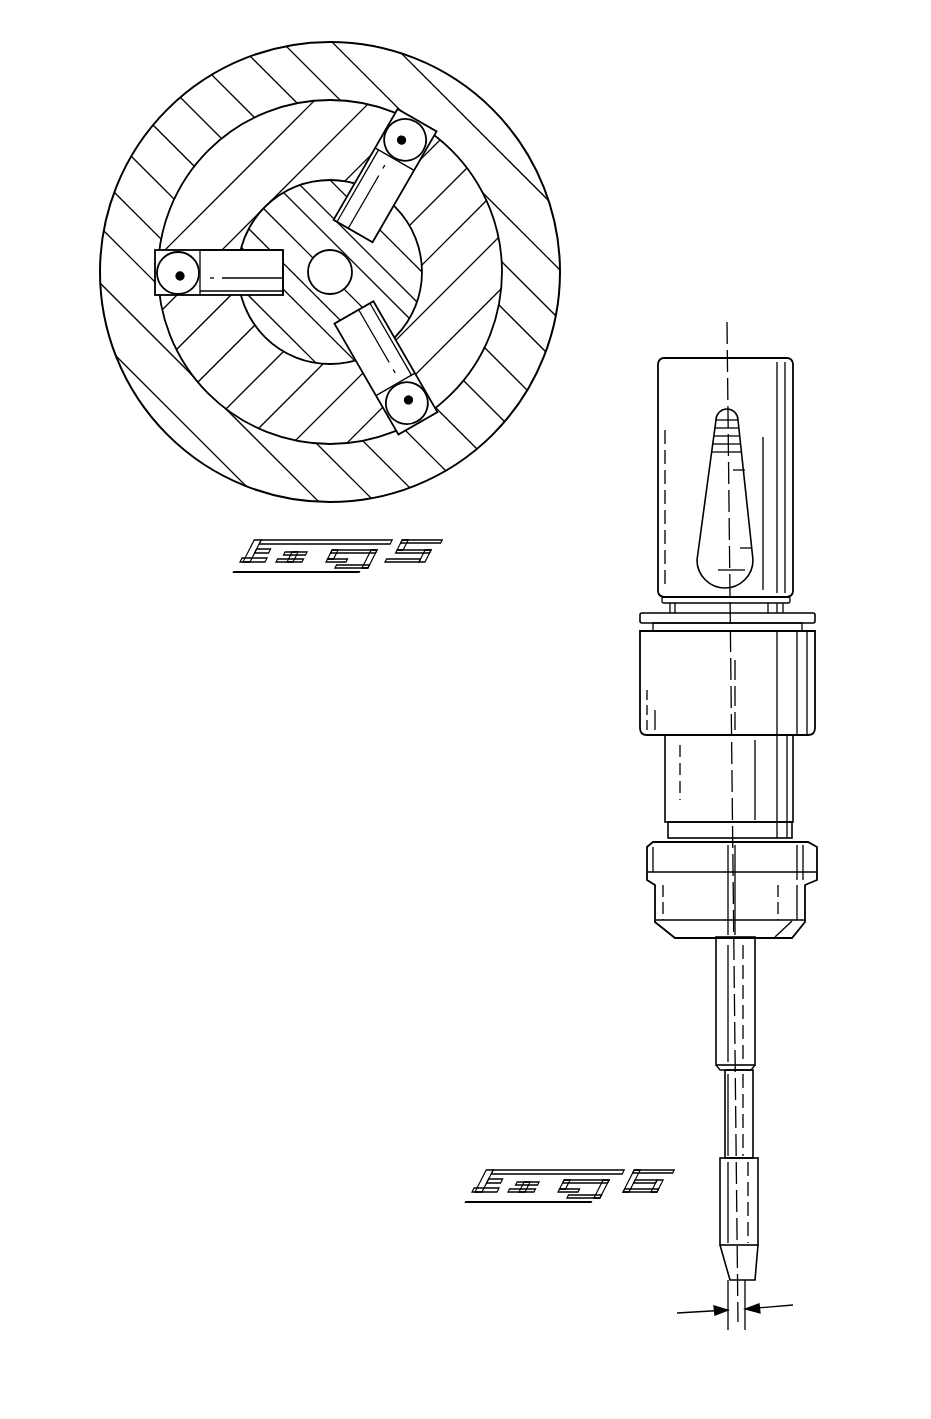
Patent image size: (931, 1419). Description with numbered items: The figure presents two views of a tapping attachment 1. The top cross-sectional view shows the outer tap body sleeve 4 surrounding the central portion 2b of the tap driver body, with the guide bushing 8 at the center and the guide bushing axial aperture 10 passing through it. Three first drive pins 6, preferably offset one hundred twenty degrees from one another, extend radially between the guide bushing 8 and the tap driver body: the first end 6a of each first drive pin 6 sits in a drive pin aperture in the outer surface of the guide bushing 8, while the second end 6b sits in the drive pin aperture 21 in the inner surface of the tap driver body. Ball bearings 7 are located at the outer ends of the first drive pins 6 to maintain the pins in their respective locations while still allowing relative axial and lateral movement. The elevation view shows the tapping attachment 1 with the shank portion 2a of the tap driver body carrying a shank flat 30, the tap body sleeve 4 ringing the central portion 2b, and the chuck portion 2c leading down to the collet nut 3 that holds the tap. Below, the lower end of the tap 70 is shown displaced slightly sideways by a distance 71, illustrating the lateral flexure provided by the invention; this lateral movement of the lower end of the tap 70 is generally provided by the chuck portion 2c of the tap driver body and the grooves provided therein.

In FIG. 5, the tapping attachment 1 is at (127, 466).
In FIG. 6, the shank portion of tap driver body 2a is at (768, 477).
In FIG. 5, the central portion of tap driver body 2b is at (207, 183).
In FIG. 6, the central portion of tap driver body 2b is at (830, 630).
In FIG. 6, the chuck portion of tap driver body 2c is at (765, 777).
In FIG. 6, the collet nut 3 is at (692, 905).
In FIG. 5, the tap body sleeve 4 is at (520, 203).
In FIG. 6, the tap body sleeve 4 is at (702, 702).
In FIG. 5, the first drive pin 6 is at (218, 294).
In FIG. 5, the first end of first drive pin 6a is at (330, 238).
In FIG. 5, the second end of first drive pin 6b is at (210, 248).
In FIG. 5, the ball bearing 7 is at (408, 128).
In FIG. 5, the guide bushing 8 is at (397, 285).
In FIG. 5, the guide bushing axial aperture 10 is at (330, 273).
In FIG. 5, the drive pin aperture 21 is at (383, 399).
In FIG. 6, the shank flat 30 is at (712, 525).
In FIG. 6, the lower end of tap 70 is at (746, 1185).
In FIG. 6, the distance of lateral movement 71 is at (741, 1325).